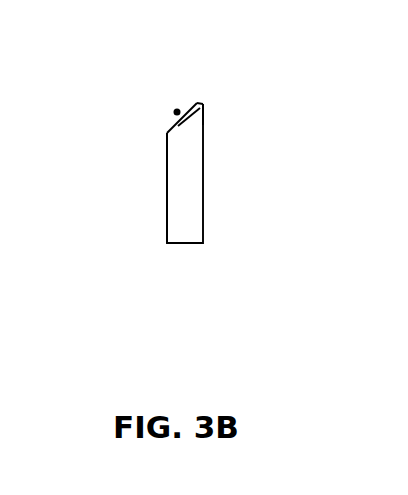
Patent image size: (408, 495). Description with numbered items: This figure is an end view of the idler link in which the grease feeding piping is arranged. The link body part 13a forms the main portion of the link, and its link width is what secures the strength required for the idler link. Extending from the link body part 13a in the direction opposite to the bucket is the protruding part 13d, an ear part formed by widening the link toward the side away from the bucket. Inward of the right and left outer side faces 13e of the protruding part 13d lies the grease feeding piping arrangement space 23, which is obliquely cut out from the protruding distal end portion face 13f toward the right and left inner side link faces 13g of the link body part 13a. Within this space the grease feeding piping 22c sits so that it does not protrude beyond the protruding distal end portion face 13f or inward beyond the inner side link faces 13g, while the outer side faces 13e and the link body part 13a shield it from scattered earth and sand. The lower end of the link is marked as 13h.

The link body part 13a is at (191, 210).
The protruding part 13d is at (203, 113).
The right and left outer side faces 13e is at (204, 113).
The protruding distal end portion face 13f is at (198, 103).
The right and left inner side link faces 13g is at (167, 181).
The base end 13h is at (185, 243).
The grease feeding piping 22c is at (174, 111).
The grease feeding piping arrangement space 23 is at (186, 105).